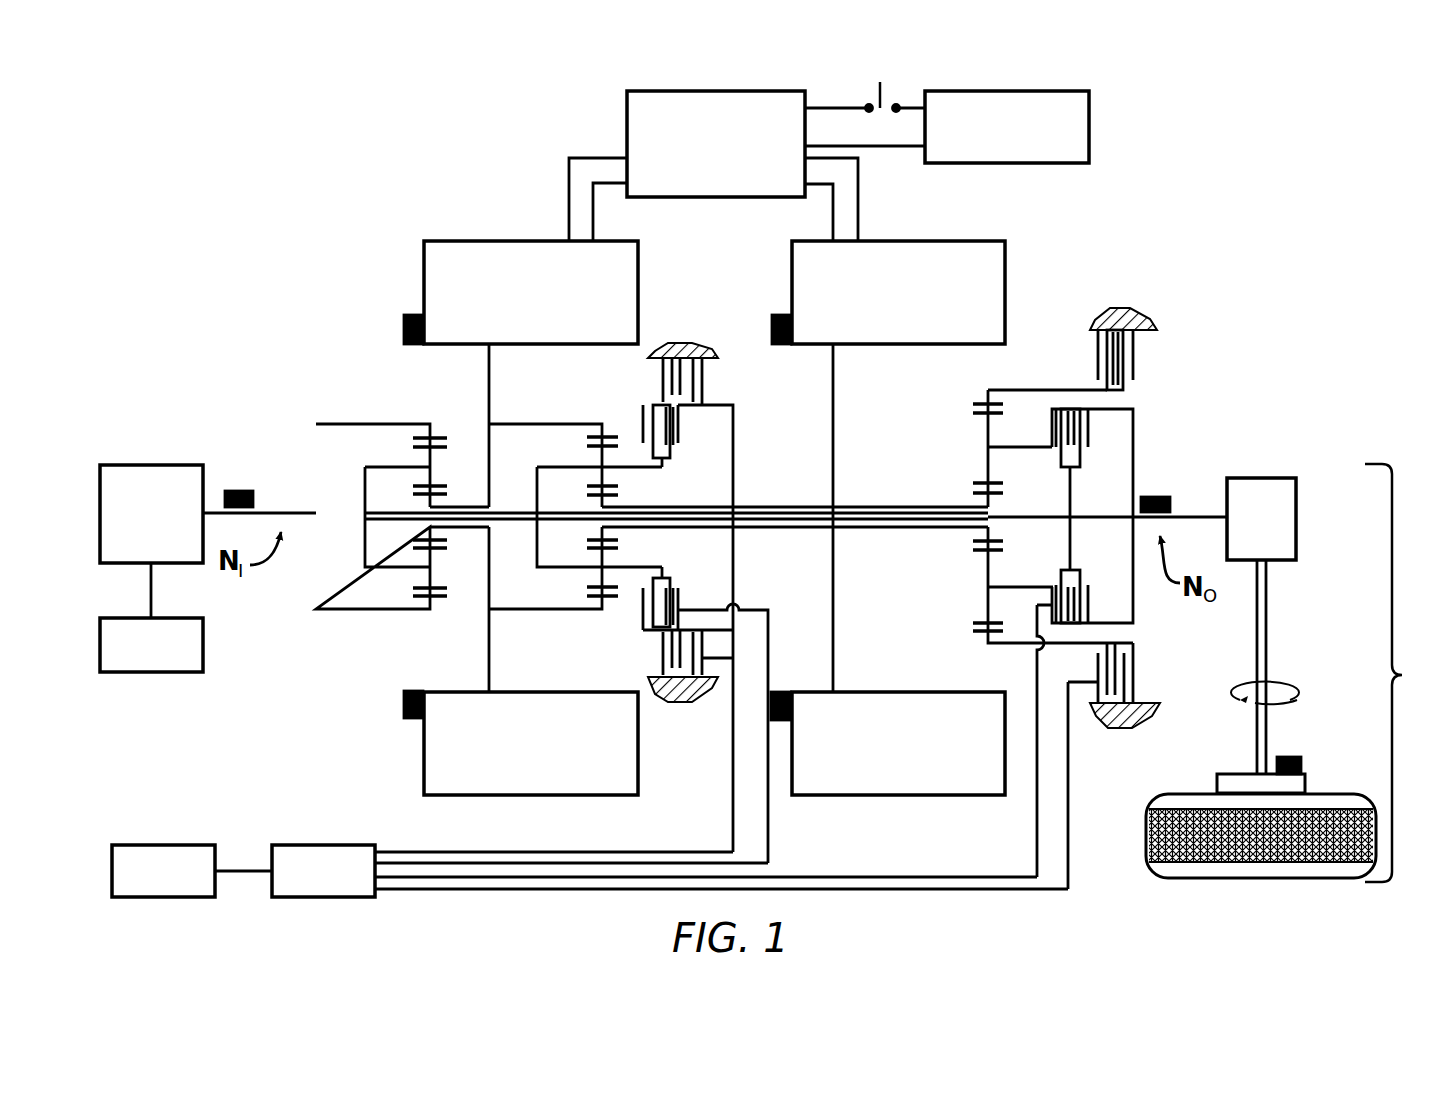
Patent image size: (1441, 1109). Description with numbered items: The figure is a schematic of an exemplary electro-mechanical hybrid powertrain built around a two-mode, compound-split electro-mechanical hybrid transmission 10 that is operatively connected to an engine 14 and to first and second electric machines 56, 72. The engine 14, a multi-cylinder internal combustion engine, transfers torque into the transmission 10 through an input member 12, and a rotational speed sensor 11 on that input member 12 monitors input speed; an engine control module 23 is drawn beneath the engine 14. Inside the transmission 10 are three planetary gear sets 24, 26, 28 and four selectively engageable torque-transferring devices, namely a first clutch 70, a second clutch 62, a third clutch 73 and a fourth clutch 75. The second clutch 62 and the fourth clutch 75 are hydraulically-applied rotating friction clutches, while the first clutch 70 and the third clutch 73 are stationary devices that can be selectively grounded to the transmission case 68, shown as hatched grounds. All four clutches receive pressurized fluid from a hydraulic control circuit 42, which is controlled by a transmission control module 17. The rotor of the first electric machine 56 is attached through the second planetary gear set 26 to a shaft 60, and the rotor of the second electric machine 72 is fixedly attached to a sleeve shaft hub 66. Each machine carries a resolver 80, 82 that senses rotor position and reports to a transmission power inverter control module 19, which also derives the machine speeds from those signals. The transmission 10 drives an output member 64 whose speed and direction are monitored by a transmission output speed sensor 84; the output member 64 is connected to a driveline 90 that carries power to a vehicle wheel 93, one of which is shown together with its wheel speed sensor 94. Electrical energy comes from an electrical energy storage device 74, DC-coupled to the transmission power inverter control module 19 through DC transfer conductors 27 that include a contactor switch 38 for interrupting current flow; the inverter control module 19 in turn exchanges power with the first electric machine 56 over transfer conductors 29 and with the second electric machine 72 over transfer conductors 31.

The electro-mechanical hybrid transmission 10 is at (378, 193).
The rotational speed sensor 11 is at (240, 490).
The input member 12 is at (291, 511).
The engine 14 is at (156, 465).
The transmission control module 17 is at (153, 846).
The transmission power inverter control module 19 is at (627, 103).
The engine control module 23 is at (203, 665).
The first planetary gear set 24 is at (418, 410).
The second planetary gear set 26 is at (597, 412).
The DC transfer conductors 27 is at (819, 107).
The third planetary gear set 28 is at (977, 386).
The transfer conductors 29 is at (569, 195).
The transfer conductors 31 is at (858, 196).
The contactor switch 38 is at (882, 93).
The hydraulic control circuit 42 is at (293, 846).
The first electric machine 56 is at (424, 272).
The shaft 60 is at (1043, 512).
The clutch C2 62 is at (1101, 446).
The output member 64 is at (1195, 510).
The sleeve shaft hub 66 is at (873, 505).
The transmission case 68 is at (683, 343).
The clutch C1 70 is at (1082, 347).
The second electric machine 72 is at (1005, 258).
The clutch C3 73 is at (715, 385).
The electrical energy storage device 74 is at (1089, 110).
The clutch C4 75 is at (692, 441).
The resolver 80 is at (404, 328).
The resolver 82 is at (781, 315).
The transmission output speed sensor 84 is at (1160, 496).
The driveline 90 is at (1393, 675).
The vehicle wheel 93 is at (1217, 782).
The sensor 94 is at (1291, 755).